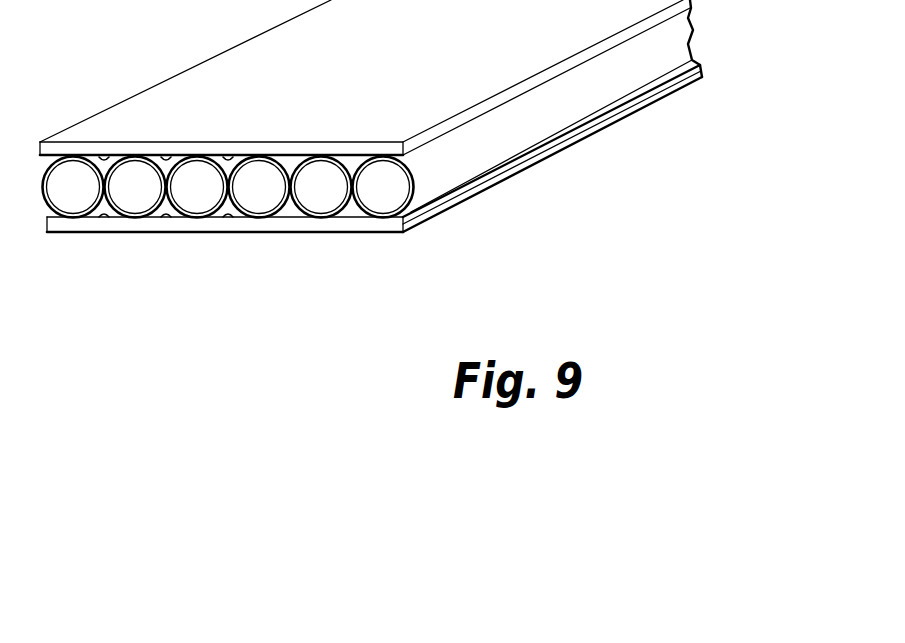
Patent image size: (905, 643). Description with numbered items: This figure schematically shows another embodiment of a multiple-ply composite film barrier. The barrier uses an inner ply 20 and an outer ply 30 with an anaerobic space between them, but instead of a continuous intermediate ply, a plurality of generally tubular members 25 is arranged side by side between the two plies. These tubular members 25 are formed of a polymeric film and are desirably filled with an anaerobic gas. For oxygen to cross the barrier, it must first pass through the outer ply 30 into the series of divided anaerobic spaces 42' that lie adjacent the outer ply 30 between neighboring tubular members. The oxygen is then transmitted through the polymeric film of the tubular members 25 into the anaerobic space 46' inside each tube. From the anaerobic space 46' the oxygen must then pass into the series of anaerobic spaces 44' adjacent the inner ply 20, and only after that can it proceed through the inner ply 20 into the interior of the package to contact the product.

The outer ply 30 is at (385, 74).
The inner ply 20 is at (240, 233).
The tubular members 25 is at (440, 163).
The anaerobic space 46' is at (228, 187).
The divided anaerobic spaces 42' is at (160, 96).
The anaerobic spaces 44' is at (155, 264).